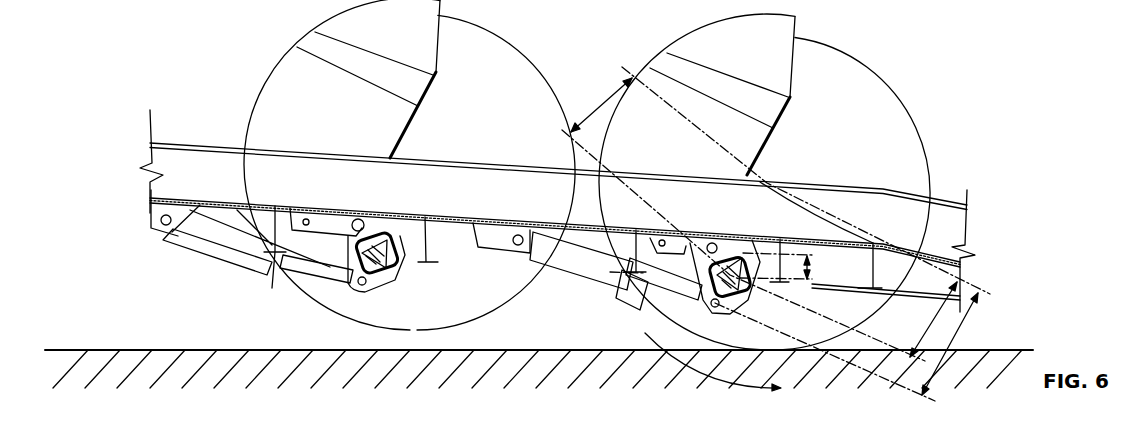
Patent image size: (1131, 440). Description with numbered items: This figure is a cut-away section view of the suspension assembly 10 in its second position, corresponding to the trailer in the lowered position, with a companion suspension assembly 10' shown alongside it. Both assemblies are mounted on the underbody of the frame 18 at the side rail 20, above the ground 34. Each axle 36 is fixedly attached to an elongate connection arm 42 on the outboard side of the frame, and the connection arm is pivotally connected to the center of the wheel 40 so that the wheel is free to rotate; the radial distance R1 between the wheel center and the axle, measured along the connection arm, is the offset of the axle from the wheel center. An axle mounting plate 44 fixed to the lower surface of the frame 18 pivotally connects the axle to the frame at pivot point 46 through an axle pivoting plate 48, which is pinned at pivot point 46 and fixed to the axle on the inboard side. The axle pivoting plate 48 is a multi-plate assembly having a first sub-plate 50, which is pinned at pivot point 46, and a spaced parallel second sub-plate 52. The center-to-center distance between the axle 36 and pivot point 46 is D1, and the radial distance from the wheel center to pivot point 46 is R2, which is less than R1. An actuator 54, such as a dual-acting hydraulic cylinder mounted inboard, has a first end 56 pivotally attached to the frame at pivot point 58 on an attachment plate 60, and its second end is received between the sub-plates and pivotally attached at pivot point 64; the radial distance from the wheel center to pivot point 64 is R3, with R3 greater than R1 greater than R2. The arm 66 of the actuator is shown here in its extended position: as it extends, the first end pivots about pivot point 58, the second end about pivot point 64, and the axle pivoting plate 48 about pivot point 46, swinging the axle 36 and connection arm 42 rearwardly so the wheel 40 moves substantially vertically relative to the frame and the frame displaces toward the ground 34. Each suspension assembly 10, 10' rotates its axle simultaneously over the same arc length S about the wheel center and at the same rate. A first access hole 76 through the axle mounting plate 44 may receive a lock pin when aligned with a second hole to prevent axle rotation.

The suspension assembly 10 is at (286, 258).
The suspension assembly 10' is at (716, 286).
The frame 18 is at (938, 208).
The side rail 20 is at (557, 201).
The ground 34 is at (1000, 348).
The first axle 36 is at (378, 214).
The wheel 40 is at (484, 53).
The connection arm 42 is at (426, 215).
The axle mounting plate 44 is at (326, 209).
The pivot point 46 is at (356, 214).
The axle pivoting plate 48 is at (338, 283).
The first sub-plate 50 is at (396, 214).
The second sub-plate 52 is at (383, 280).
The actuator 54 is at (220, 247).
The first end 56 is at (163, 241).
The pivot point 58 is at (158, 230).
The attachment plate 60 is at (151, 221).
The pivot point 64 is at (355, 288).
The arm 66 is at (284, 258).
The first access hole 76 is at (292, 206).
The arc length S is at (686, 188).
The radial distance R1 is at (922, 338).
The radial distance R2 is at (602, 108).
The radial distance R3 is at (957, 336).
The distance D1 is at (806, 268).